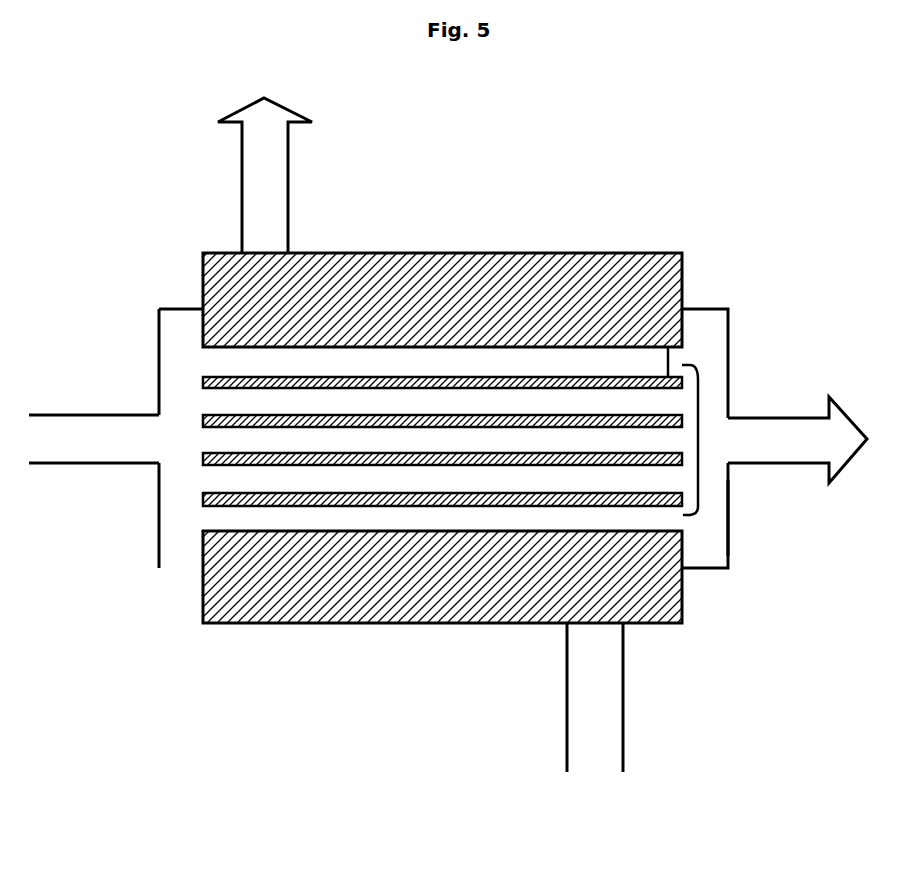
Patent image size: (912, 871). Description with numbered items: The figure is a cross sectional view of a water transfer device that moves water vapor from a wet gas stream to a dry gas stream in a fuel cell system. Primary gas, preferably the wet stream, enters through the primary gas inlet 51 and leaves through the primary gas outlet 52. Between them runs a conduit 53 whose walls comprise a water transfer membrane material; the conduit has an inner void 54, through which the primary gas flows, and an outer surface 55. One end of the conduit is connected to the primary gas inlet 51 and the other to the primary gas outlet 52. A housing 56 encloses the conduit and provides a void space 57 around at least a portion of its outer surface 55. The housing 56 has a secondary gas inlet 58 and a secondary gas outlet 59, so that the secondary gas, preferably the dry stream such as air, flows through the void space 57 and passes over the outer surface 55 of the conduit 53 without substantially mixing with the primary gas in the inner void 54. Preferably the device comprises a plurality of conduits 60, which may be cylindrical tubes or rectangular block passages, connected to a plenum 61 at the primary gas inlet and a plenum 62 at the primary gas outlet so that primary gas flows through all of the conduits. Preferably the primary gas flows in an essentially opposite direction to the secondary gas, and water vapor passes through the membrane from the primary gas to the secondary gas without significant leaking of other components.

The primary gas inlet 51 is at (148, 430).
The primary gas outlet 52 is at (763, 430).
The conduit 53 is at (670, 363).
The inner void 54 is at (683, 285).
The outer surface 55 is at (627, 360).
The housing 56 is at (253, 623).
The void space 57 is at (203, 375).
The secondary gas inlet 58 is at (608, 640).
The secondary gas outlet 59 is at (278, 242).
The plurality of conduits 60 is at (698, 433).
The plenum at the primary gas inlet 61 is at (178, 513).
The plenum at the primary gas outlet 62 is at (707, 539).